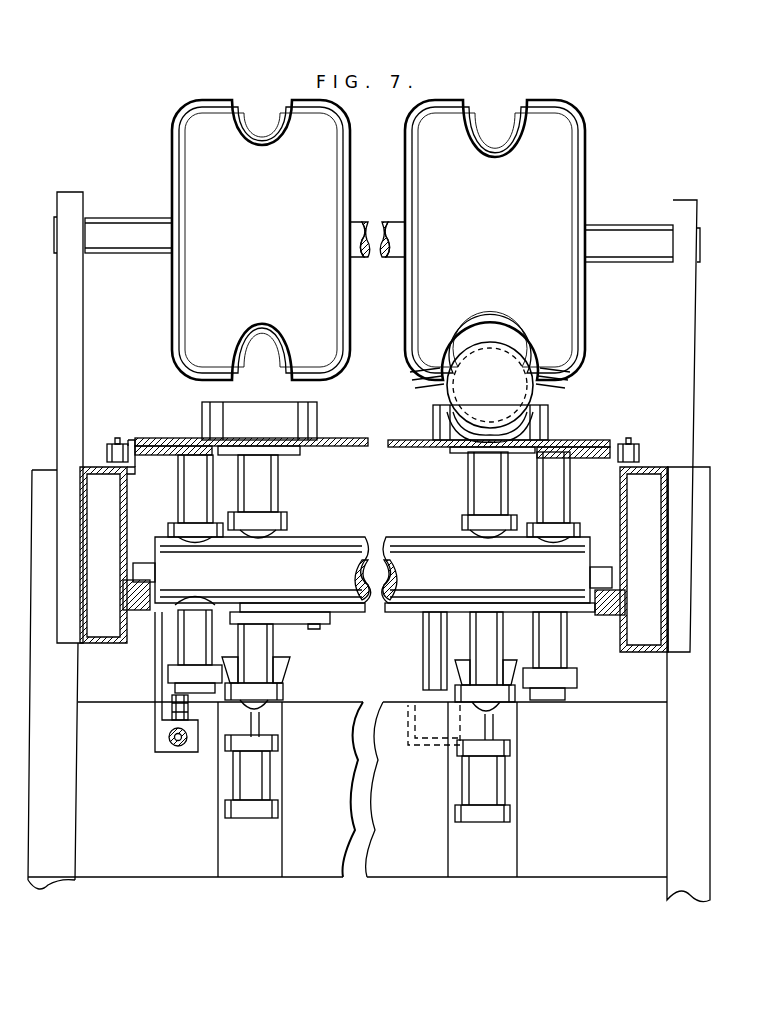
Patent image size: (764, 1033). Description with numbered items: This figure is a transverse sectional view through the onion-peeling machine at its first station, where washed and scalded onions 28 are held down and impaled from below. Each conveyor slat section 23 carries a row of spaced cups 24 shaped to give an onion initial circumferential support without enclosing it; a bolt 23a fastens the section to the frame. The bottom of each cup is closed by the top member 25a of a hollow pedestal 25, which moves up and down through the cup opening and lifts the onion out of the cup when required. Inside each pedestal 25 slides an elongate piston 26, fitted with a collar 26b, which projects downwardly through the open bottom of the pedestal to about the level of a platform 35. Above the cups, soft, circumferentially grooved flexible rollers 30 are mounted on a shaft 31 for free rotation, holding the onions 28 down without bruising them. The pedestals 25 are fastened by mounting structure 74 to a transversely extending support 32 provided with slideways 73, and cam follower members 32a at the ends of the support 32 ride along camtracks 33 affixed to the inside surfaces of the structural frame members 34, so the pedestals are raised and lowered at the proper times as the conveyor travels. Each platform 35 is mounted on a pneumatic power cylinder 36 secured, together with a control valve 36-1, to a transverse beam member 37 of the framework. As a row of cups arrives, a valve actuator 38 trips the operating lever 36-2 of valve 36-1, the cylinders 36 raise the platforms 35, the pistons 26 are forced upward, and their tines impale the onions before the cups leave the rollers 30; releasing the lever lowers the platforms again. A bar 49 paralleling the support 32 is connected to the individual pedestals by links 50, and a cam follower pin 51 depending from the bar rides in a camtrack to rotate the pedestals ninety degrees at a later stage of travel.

The conveyor slat section 23 is at (358, 448).
The bolt 23a is at (117, 444).
The cup 24 is at (220, 418).
The pedestal 25 is at (262, 480).
The top member 25a is at (470, 438).
The piston 26 is at (252, 646).
The collar 26b is at (455, 698).
The onion 28 is at (488, 372).
The flexible roller 30 is at (450, 186).
The shaft 31 is at (134, 232).
The support 32 is at (404, 548).
The cam follower member 32a is at (146, 568).
The camtrack 33 is at (120, 574).
The structural frame member 34 is at (85, 500).
The platform 35 is at (278, 664).
The power cylinder 36 is at (262, 777).
The valve 36-1 is at (178, 752).
The operating lever 36-2 is at (172, 710).
The transverse beam member 37 is at (390, 872).
The valve actuator 38 is at (190, 645).
The bar 49 is at (346, 606).
The link 50 is at (283, 610).
The cam follower pin 51 is at (430, 632).
The slideway 73 is at (195, 517).
The mounting structure 74 is at (286, 522).